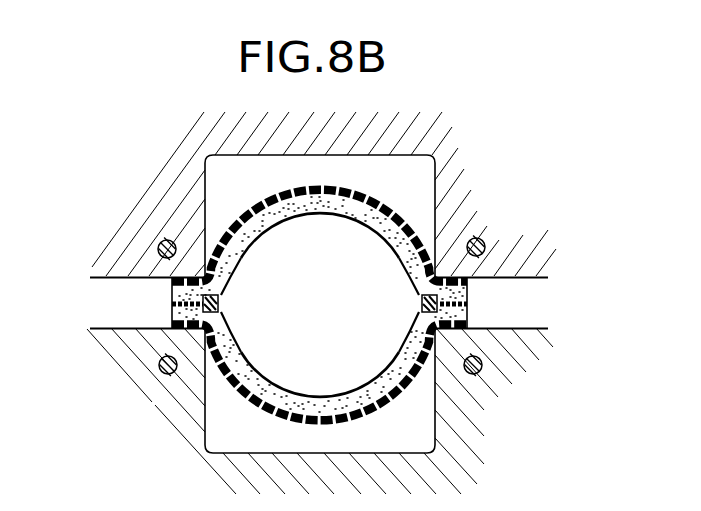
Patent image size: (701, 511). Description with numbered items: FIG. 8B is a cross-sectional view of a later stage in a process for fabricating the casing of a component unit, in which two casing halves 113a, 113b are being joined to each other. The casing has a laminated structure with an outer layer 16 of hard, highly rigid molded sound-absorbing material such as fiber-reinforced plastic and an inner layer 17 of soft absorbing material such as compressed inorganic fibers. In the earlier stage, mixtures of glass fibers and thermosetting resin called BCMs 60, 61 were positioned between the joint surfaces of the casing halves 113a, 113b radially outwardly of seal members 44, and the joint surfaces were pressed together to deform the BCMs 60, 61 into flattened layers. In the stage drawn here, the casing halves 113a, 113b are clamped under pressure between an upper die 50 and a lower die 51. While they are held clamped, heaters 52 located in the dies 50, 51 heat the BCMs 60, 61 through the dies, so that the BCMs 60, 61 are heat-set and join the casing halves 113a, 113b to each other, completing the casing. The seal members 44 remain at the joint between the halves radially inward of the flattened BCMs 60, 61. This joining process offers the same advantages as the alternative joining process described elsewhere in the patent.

The outer layer 16 is at (319, 265).
The inner layer 17 is at (321, 212).
The seal member 44 is at (220, 304).
The upper die 50 is at (135, 177).
The lower die 51 is at (133, 467).
The heater 52 is at (167, 240).
The BCM 60 is at (469, 304).
The BCM 61 is at (171, 305).
The casing half 113a is at (397, 183).
The casing half 113b is at (270, 422).